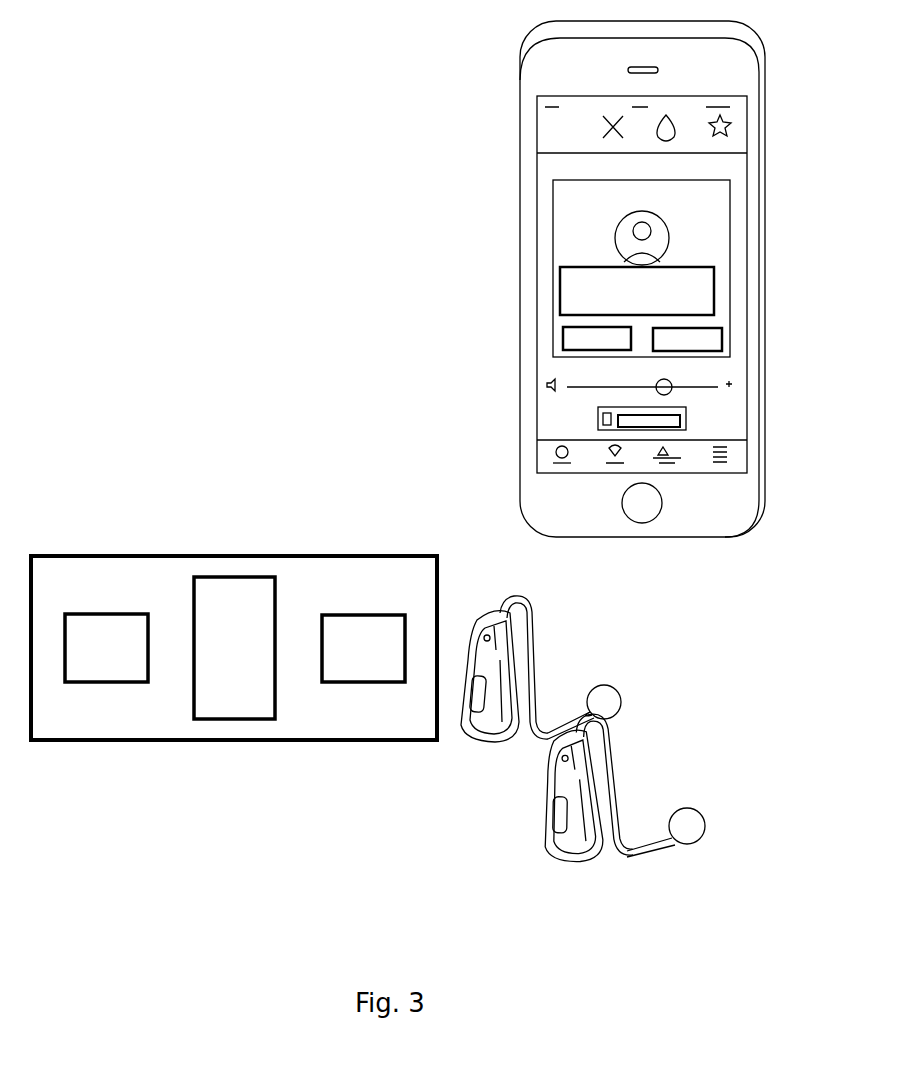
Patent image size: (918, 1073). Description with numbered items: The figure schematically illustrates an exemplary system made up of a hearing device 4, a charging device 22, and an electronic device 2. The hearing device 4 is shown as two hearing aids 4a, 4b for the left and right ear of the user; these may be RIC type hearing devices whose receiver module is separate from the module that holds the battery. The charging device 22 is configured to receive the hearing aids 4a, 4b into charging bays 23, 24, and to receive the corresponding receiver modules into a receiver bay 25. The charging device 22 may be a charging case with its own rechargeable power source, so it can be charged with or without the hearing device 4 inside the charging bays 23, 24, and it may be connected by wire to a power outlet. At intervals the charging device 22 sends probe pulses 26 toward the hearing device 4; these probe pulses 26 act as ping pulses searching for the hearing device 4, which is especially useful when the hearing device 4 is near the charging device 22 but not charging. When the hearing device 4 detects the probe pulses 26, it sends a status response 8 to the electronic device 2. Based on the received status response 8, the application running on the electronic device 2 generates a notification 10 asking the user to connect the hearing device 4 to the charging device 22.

The electronic device 2 is at (700, 518).
The notification 10 is at (560, 288).
The status response 8 is at (648, 542).
The hearing device 4 is at (642, 752).
The hearing aid 4a is at (592, 842).
The hearing aid 4b is at (487, 726).
The charging device 22 is at (232, 553).
The charging bay 23 is at (98, 645).
The charging bay 24 is at (378, 645).
The receiver bay 25 is at (255, 660).
The probe pulses 26 is at (498, 850).